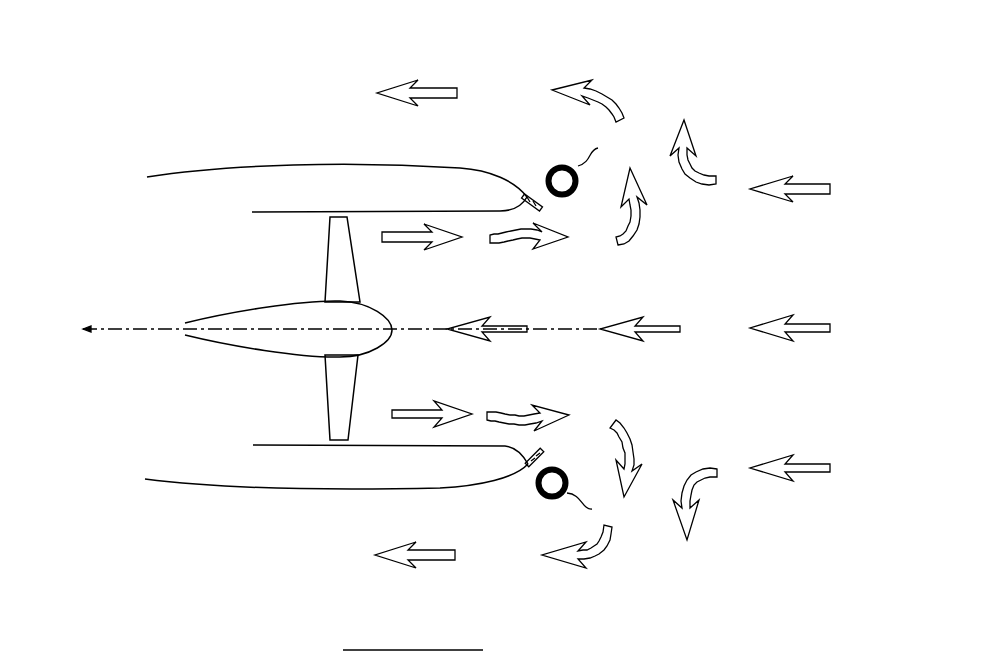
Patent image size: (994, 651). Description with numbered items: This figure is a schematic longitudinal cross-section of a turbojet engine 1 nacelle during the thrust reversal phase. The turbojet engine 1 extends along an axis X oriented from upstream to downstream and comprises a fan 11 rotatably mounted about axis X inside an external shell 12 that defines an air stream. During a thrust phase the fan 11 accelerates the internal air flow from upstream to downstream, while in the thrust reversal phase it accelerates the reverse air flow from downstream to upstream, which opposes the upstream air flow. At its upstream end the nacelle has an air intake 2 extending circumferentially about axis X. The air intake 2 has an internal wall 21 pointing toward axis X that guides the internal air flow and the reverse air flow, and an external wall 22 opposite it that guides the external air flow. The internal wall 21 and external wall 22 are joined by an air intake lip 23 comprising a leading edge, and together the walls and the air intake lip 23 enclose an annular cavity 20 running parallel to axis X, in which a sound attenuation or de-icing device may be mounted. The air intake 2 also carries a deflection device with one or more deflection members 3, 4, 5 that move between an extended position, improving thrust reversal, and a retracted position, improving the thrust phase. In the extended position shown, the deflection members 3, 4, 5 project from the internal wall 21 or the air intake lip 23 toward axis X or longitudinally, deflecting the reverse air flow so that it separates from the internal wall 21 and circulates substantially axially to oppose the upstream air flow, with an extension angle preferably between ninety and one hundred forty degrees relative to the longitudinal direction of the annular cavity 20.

The turbojet engine 1 is at (120, 259).
The air intake 2 is at (507, 486).
The deflection member 3 is at (565, 330).
The deflection member 4 is at (565, 330).
The deflection member 5 is at (542, 206).
The fan 11 is at (327, 388).
The external shell 12 is at (358, 440).
The annular cavity 20 is at (490, 470).
The internal wall 21 is at (490, 222).
The external wall 22 is at (495, 170).
The air intake lip 23 is at (529, 188).